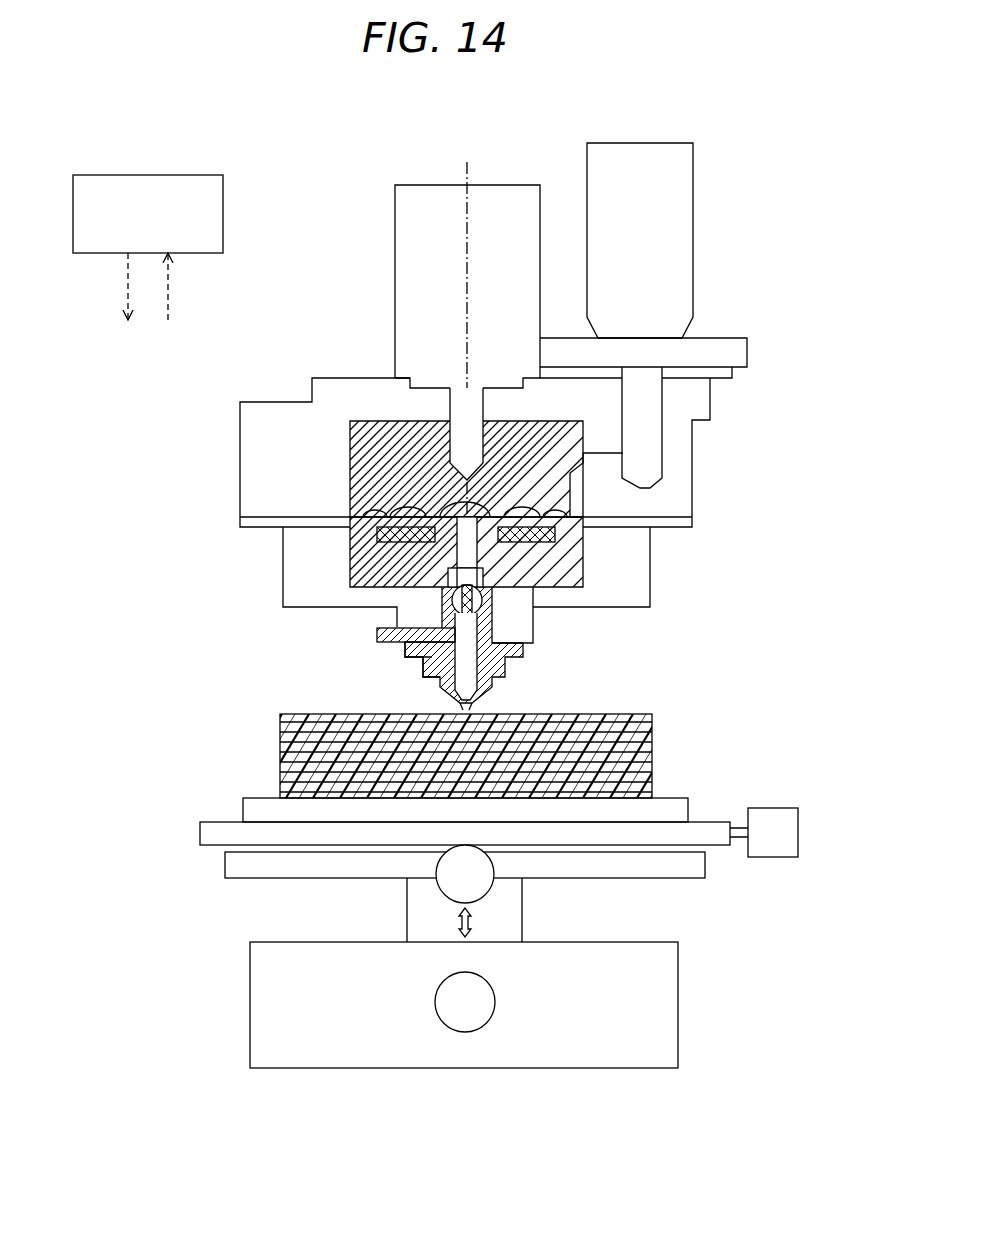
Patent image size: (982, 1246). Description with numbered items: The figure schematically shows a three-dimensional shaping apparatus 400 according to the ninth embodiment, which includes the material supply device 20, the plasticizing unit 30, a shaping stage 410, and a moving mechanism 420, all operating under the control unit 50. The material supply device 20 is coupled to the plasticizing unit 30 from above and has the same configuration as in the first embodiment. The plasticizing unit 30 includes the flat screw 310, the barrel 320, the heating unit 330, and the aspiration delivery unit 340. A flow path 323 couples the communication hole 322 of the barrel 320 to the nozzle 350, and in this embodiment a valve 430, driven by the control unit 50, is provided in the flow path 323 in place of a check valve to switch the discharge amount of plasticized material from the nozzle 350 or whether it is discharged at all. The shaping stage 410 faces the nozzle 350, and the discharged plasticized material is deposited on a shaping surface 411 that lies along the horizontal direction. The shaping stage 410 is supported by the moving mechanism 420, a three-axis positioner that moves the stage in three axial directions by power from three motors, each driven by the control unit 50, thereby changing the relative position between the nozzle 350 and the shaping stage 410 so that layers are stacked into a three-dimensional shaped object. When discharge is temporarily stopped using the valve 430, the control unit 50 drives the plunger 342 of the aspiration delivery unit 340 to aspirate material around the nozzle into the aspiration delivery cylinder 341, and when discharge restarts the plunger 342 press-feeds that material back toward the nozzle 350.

The three-dimensional shaping apparatus 400 is at (158, 115).
The control unit 50 is at (182, 175).
The material supply device 20 is at (618, 143).
The plasticizing unit 30 is at (300, 358).
The flat screw 310 is at (437, 505).
The barrel 320 is at (350, 565).
The communication hole 322 is at (443, 510).
The flow path 323 is at (547, 545).
The heating unit 330 is at (467, 552).
The valve 430 is at (492, 638).
The aspiration delivery unit 340 is at (388, 657).
The aspiration delivery cylinder 341 is at (443, 675).
The plunger 342 is at (377, 642).
The nozzle 350 is at (487, 690).
The shaping stage 410 is at (197, 773).
The shaping surface 411 is at (672, 797).
The moving mechanism 420 is at (195, 945).